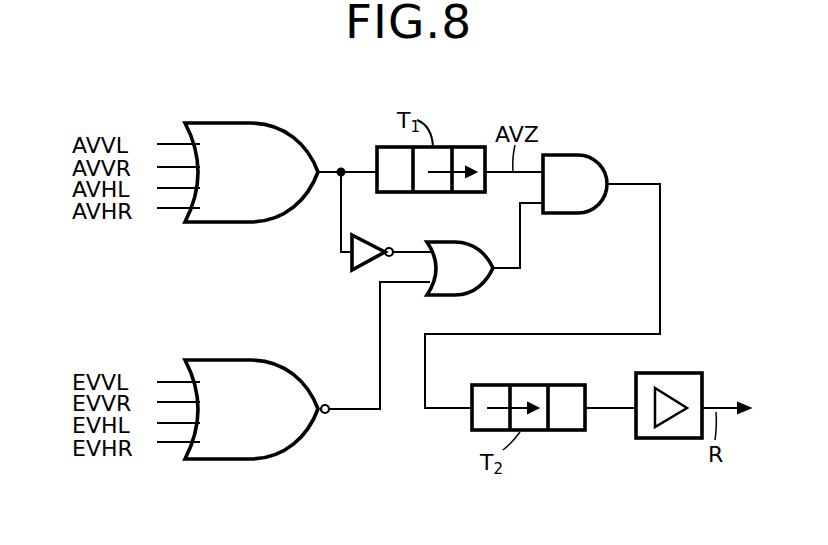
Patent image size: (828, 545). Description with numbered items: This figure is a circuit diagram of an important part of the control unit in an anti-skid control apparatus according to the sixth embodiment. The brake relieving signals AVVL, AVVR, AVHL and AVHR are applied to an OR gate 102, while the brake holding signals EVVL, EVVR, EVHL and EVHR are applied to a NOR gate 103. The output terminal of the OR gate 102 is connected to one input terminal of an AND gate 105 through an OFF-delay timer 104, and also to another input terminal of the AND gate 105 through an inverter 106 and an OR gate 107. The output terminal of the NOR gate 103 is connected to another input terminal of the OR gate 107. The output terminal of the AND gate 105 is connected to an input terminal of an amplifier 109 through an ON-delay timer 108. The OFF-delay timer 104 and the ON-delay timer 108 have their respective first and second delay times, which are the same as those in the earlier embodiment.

The OR gate 102 is at (228, 123).
The NOR gate 103 is at (232, 360).
The OFF-delay timer 104 is at (468, 147).
The AND gate 105 is at (575, 155).
The inverter 106 is at (352, 265).
The OR gate 107 is at (467, 295).
The ON-delay timer 108 is at (566, 432).
The amplifier 109 is at (663, 440).